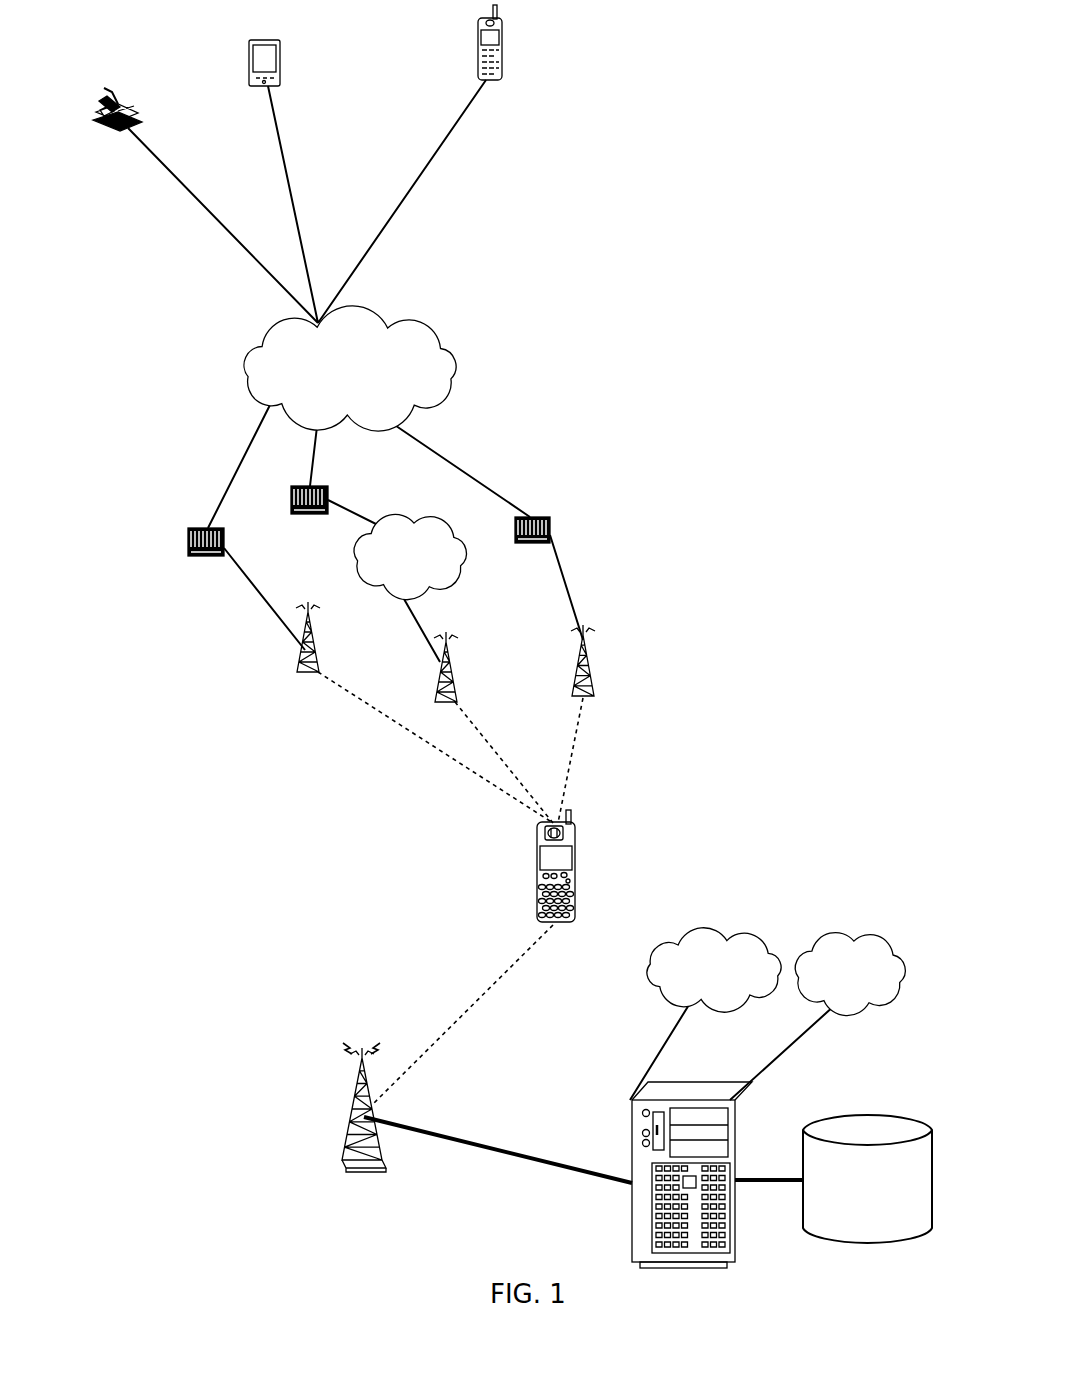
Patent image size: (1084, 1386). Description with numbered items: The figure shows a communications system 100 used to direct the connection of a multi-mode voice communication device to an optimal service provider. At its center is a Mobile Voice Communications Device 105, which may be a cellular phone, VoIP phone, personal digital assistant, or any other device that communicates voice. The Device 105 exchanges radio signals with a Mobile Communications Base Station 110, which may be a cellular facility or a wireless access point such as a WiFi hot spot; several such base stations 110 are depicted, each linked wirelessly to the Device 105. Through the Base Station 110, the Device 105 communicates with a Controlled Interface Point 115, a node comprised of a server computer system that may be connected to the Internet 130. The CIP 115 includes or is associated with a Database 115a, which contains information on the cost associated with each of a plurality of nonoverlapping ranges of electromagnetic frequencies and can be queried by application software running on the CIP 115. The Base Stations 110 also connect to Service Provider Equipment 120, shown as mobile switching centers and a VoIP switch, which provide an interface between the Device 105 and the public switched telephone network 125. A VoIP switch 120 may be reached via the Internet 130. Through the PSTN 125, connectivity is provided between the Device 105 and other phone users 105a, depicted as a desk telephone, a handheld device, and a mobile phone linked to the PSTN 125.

The communications system 100 is at (692, 757).
The Mobile Voice Communications Device 105 is at (574, 920).
The phone users 105a is at (113, 88).
The Mobile Communications Base Station 110 is at (316, 670).
The Controlled Interface Point (CIP) 115 is at (680, 1100).
The Database 115a is at (866, 1113).
The Service Provider Equipment 120 is at (222, 536).
The public switched telephone network (PSTN) 125 is at (380, 322).
The Internet 130 is at (462, 556).